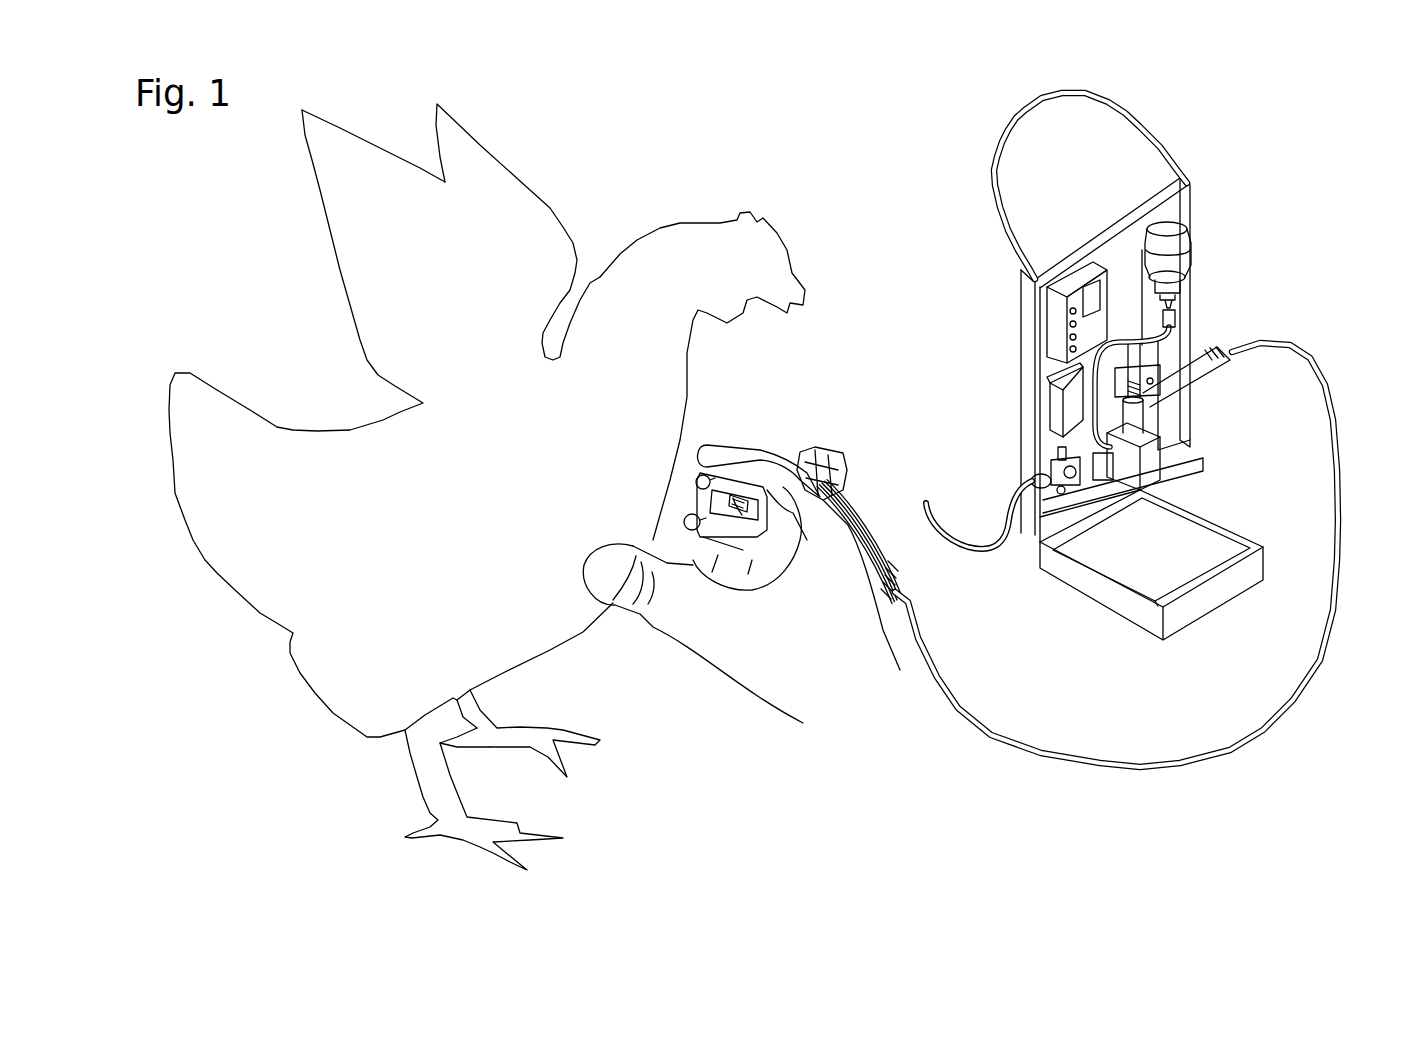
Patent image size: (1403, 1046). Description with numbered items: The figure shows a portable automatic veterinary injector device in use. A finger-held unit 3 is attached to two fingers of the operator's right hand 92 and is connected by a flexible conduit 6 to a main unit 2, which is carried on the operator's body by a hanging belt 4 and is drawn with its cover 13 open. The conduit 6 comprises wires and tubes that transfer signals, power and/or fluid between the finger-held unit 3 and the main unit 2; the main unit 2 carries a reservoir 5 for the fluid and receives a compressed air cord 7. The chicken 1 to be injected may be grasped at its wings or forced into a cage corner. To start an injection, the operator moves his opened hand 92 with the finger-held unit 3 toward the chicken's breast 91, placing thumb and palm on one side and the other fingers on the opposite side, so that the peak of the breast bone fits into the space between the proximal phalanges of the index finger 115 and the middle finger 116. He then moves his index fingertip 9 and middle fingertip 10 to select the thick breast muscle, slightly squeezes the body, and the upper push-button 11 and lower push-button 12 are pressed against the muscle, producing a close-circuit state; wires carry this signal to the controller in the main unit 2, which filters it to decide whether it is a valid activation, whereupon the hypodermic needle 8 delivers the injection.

The chicken to be injected 1 is at (363, 402).
The main unit 2 is at (1015, 303).
The finger-held unit 3 is at (763, 578).
The hanging belt 4 is at (1000, 122).
The reservoir 5 is at (1192, 250).
The flexible conduit 6 is at (1298, 337).
The compressed air cord 7 is at (1007, 503).
The hypodermic needle 8 is at (738, 500).
The index fingertip 9 is at (708, 455).
The middle fingertip 10 is at (692, 530).
The upper push-button 11 is at (714, 478).
The lower push-button 12 is at (695, 530).
The cover 13 is at (1113, 617).
The chicken's breast 91 is at (635, 510).
The operator's hand 92 is at (761, 674).
The index finger 115 is at (787, 490).
The middle finger 116 is at (767, 555).